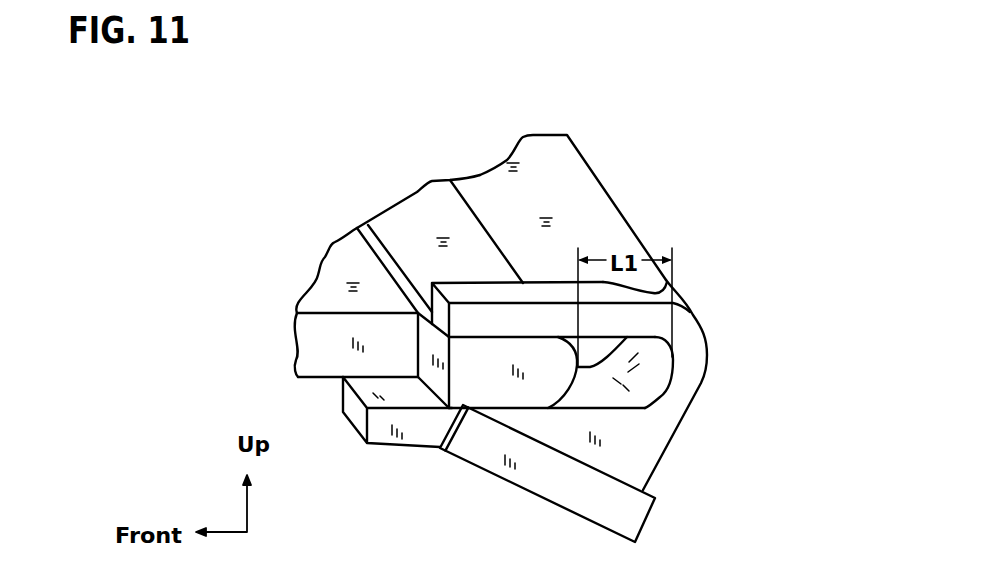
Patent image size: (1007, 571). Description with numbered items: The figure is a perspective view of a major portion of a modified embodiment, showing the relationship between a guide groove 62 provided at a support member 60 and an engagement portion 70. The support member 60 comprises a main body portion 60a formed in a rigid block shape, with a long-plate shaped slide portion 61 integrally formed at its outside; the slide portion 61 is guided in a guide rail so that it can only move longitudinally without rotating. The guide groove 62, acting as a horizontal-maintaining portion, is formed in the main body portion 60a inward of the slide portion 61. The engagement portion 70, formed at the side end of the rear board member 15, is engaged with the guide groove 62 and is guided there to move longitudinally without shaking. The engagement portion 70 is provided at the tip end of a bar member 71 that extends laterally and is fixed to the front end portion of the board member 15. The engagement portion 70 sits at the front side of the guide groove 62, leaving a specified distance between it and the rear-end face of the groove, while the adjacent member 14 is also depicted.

The seat cushion frame 14 is at (323, 258).
The rear board member 15 is at (580, 190).
The support member 60 is at (755, 385).
The main body portion 60a is at (715, 345).
The slide portion 61 is at (567, 495).
The guide groove 62 is at (603, 393).
The engagement portion 70 is at (485, 360).
The bar member 71 is at (412, 222).